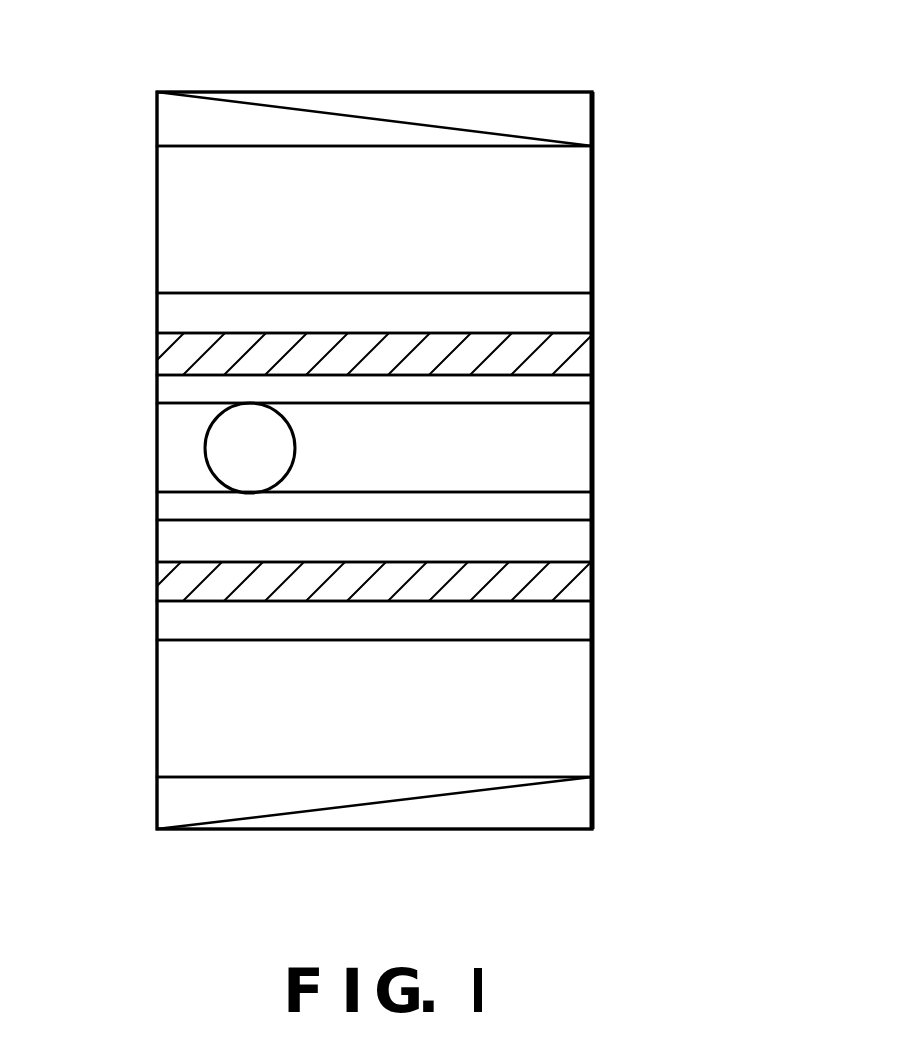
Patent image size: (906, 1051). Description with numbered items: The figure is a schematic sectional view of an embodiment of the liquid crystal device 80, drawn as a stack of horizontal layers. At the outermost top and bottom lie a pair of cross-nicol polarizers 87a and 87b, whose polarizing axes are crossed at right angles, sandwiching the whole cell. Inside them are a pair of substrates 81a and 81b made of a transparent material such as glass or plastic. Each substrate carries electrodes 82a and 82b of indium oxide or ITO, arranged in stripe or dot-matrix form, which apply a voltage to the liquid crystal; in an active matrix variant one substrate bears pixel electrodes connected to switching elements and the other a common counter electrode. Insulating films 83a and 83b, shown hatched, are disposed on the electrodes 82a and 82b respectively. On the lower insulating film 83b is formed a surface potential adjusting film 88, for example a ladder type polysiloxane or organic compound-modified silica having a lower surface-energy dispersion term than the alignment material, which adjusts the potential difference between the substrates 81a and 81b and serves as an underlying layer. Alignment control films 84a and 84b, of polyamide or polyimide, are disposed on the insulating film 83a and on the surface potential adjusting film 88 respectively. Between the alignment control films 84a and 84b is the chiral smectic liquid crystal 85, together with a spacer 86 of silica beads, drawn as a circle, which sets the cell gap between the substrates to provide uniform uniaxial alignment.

The liquid crystal device 80 is at (482, 82).
The cross-nicol polarizer 87a is at (575, 119).
The substrate 81a is at (580, 208).
The electrode 82a is at (582, 313).
The insulating film 83a is at (583, 356).
The alignment control film 84a is at (582, 393).
The chiral smectic liquid crystal 85 is at (575, 456).
The spacer 86 is at (225, 450).
The alignment control film 84b is at (580, 506).
The surface potential adjusting film 88 is at (175, 541).
The insulating film 83b is at (583, 589).
The electrode 82b is at (582, 626).
The substrate 81b is at (580, 706).
The cross-nicol polarizer 87b is at (582, 793).